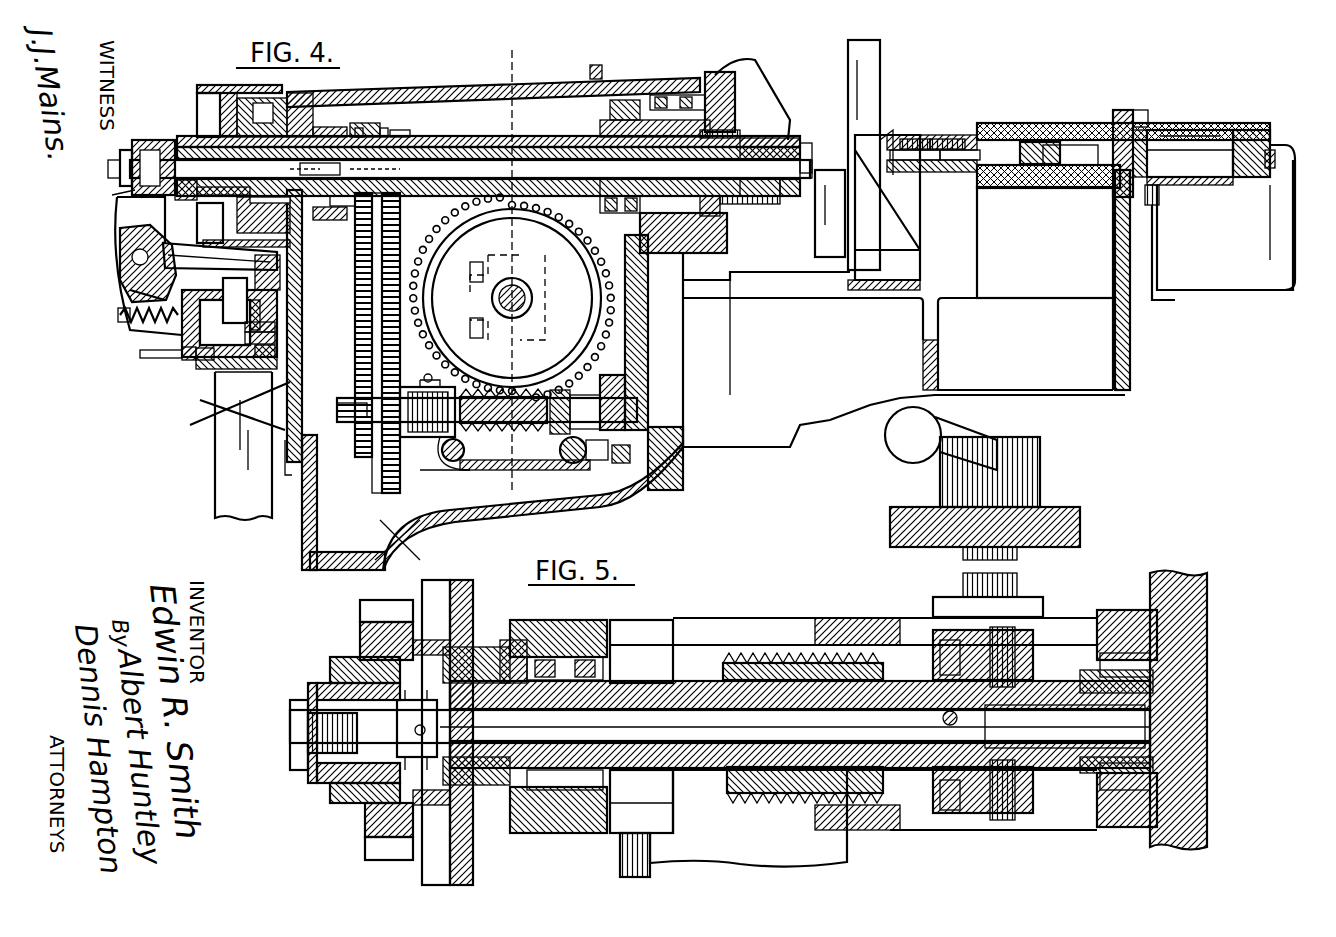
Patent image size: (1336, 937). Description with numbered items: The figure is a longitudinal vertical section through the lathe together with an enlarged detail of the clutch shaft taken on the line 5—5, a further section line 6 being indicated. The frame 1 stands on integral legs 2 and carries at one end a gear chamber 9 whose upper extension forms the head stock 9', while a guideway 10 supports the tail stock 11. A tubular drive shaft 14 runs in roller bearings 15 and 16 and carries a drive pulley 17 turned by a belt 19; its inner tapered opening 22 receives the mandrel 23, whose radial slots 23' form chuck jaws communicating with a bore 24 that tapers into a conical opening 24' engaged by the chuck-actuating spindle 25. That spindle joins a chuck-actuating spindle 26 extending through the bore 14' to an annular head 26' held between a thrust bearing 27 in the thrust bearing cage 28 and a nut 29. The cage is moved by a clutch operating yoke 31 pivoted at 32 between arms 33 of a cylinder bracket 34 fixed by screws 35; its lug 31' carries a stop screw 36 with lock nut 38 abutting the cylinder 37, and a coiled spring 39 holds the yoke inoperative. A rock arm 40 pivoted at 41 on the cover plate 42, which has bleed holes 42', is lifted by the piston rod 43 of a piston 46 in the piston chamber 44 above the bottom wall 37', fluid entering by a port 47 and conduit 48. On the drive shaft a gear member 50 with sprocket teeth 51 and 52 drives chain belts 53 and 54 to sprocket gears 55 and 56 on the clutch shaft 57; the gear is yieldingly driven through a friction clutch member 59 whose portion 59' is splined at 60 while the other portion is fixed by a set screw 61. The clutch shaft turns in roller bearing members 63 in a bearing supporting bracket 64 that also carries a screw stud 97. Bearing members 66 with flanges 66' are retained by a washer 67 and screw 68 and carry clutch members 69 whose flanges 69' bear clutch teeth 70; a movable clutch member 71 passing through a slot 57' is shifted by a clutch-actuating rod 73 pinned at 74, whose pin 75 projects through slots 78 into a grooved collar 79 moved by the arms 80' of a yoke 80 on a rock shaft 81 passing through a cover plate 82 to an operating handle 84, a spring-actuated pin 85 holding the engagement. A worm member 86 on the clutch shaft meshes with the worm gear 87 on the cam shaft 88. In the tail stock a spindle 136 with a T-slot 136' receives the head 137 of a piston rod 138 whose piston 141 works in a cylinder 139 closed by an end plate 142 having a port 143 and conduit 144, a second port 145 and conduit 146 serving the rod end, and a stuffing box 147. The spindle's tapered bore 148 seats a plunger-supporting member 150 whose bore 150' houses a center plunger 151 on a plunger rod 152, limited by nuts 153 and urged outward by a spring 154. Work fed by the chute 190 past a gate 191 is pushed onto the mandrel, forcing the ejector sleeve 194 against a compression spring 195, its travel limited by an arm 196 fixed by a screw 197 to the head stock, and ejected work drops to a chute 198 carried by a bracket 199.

In FIG. 4, the frame 1 is at (715, 453).
In FIG. 4, the leg 2 is at (305, 550).
In FIG. 4, the section line 5 is at (302, 440).
In FIG. 4, the section line 6 is at (482, 72).
In FIG. 4, the gear chamber 9 is at (529, 506).
In FIG. 4, the head stock 9' is at (493, 68).
In FIG. 4, the guideway 10 is at (782, 298).
In FIG. 4, the tail stock 11 is at (1085, 250).
In FIG. 4, the drive shaft 14 is at (488, 151).
In FIG. 4, the longitudinal bore 14' is at (674, 149).
In FIG. 4, the roller bearing 15 is at (630, 112).
In FIG. 4, the roller bearing 16 is at (275, 110).
In FIG. 4, the drive pulley 17 is at (220, 110).
In FIG. 4, the belt 19 is at (215, 518).
In FIG. 4, the tapered opening 22 is at (608, 195).
In FIG. 4, the mandrel 23 is at (694, 83).
In FIG. 4, the radial slots 23' is at (823, 146).
In FIG. 4, the bore 24 is at (750, 204).
In FIG. 4, the conical opening 24' is at (823, 167).
In FIG. 4, the chuck-actuating spindle 25 is at (735, 208).
In FIG. 4, the chuck-actuating spindle 26 is at (434, 158).
In FIG. 4, the annular head 26' is at (778, 135).
In FIG. 4, the thrust bearing 27 is at (145, 142).
In FIG. 4, the thrust bearing cage 28 is at (128, 150).
In FIG. 4, the nut 29 is at (108, 168).
In FIG. 4, the clutch operating yoke 31 is at (174, 266).
In FIG. 4, the lug 31' is at (158, 320).
In FIG. 4, the pivot 32 is at (120, 250).
In FIG. 4, the arms 33 is at (130, 290).
In FIG. 4, the cylinder bracket 34 is at (228, 409).
In FIG. 4, the screws 35 is at (291, 468).
In FIG. 4, the stop screw 36 is at (120, 316).
In FIG. 4, the cylinder 37 is at (217, 340).
In FIG. 4, the bottom wall 37' is at (236, 374).
In FIG. 4, the lock nut 38 is at (120, 322).
In FIG. 4, the coiled spring 39 is at (140, 354).
In FIG. 4, the rock arm 40 is at (290, 260).
In FIG. 4, the pivot 41 is at (282, 280).
In FIG. 4, the cover plate 42 is at (282, 300).
In FIG. 4, the bleed holes 42' is at (298, 315).
In FIG. 4, the piston rod 43 is at (275, 328).
In FIG. 4, the piston chamber 44 is at (275, 345).
In FIG. 4, the piston 46 is at (275, 356).
In FIG. 4, the port 47 is at (200, 357).
In FIG. 4, the conduit 48 is at (182, 354).
In FIG. 4, the gear member 50 is at (400, 130).
In FIG. 4, the sprocket teeth 51 is at (383, 130).
In FIG. 4, the sprocket teeth 52 is at (357, 130).
In FIG. 4, the chain belt 53 is at (395, 230).
In FIG. 4, the chain belt 54 is at (350, 258).
In FIG. 4, the sprocket gear 55 is at (400, 478).
In FIG. 5, the sprocket gear 55 is at (472, 850).
In FIG. 4, the sprocket gear 56 is at (362, 457).
In FIG. 5, the sprocket gear 56 is at (365, 835).
In FIG. 4, the clutch shaft 57 is at (470, 447).
In FIG. 5, the clutch shaft 57 is at (800, 678).
In FIG. 5, the slot 57' is at (321, 733).
In FIG. 4, the friction clutch member 59 is at (330, 223).
In FIG. 4, the clutch portion 59' is at (364, 100).
In FIG. 4, the spline 60 is at (345, 169).
In FIG. 4, the set screw 61 is at (315, 167).
In FIG. 4, the roller bearing members 63 is at (615, 392).
In FIG. 5, the roller bearing members 63 is at (548, 645).
In FIG. 4, the bearing supporting bracket 64 is at (630, 362).
In FIG. 5, the bearing supporting bracket 64 is at (640, 630).
In FIG. 5, the bearing members 66 is at (441, 712).
In FIG. 5, the annular flange 66' is at (429, 694).
In FIG. 5, the washer 67 is at (308, 695).
In FIG. 4, the screw 68 is at (400, 405).
In FIG. 5, the screw 68 is at (290, 732).
In FIG. 5, the clutch members 69 is at (386, 732).
In FIG. 5, the annular flanges 69' is at (393, 728).
In FIG. 5, the clutch teeth 70 is at (365, 800).
In FIG. 5, the movable clutch member 71 is at (410, 700).
In FIG. 4, the clutch-actuating rod 73 is at (470, 398).
In FIG. 5, the clutch-actuating rod 73 is at (700, 745).
In FIG. 5, the pin 74 is at (440, 727).
In FIG. 4, the pin 75 is at (565, 392).
In FIG. 5, the pin 75 is at (960, 718).
In FIG. 4, the slots 78 is at (560, 448).
In FIG. 4, the grooved collar 79 is at (585, 398).
In FIG. 5, the grooved collar 79 is at (935, 790).
In FIG. 4, the yoke 80 is at (595, 469).
In FIG. 5, the yoke 80 is at (941, 743).
In FIG. 5, the arms 80' is at (1024, 736).
In FIG. 4, the rock shaft 81 is at (560, 470).
In FIG. 4, the cover plate 82 is at (1085, 520).
In FIG. 4, the operating handle 84 is at (990, 432).
In FIG. 4, the spring-actuated pin 85 is at (620, 464).
In FIG. 4, the worm member 86 is at (515, 432).
In FIG. 5, the worm member 86 is at (790, 665).
In FIG. 4, the worm gear 87 is at (565, 262).
In FIG. 4, the cam shaft 88 is at (498, 296).
In FIG. 4, the screw stud 97 is at (455, 472).
In FIG. 4, the spindle 136 is at (1123, 131).
In FIG. 4, the T-slot 136' is at (1136, 98).
In FIG. 4, the head 137 is at (1112, 125).
In FIG. 4, the piston rod 138 is at (1190, 150).
In FIG. 4, the cylinder 139 is at (1255, 185).
In FIG. 4, the piston 141 is at (1242, 130).
In FIG. 4, the end plate 142 is at (1285, 145).
In FIG. 4, the port 143 is at (1270, 170).
In FIG. 4, the conduit 144 is at (1270, 280).
In FIG. 4, the port 145 is at (1160, 195).
In FIG. 4, the conduit 146 is at (1155, 262).
In FIG. 4, the stuffing box 147 is at (1142, 132).
In FIG. 4, the tapered bore 148 is at (1075, 165).
In FIG. 4, the plunger-supporting member 150 is at (943, 128).
In FIG. 4, the concentric bore 150' is at (928, 177).
In FIG. 4, the center plunger 151 is at (903, 136).
In FIG. 4, the plunger rod 152 is at (990, 165).
In FIG. 4, the nuts 153 is at (1045, 165).
In FIG. 4, the spring 154 is at (948, 138).
In FIG. 4, the chute 190 is at (882, 50).
In FIG. 4, the gate 191 is at (888, 165).
In FIG. 4, the ejector sleeve 194 is at (795, 222).
In FIG. 4, the compression spring 195 is at (742, 132).
In FIG. 4, the arm 196 is at (764, 75).
In FIG. 4, the screw 197 is at (596, 65).
In FIG. 4, the chute 198 is at (818, 245).
In FIG. 4, the bracket 199 is at (900, 238).